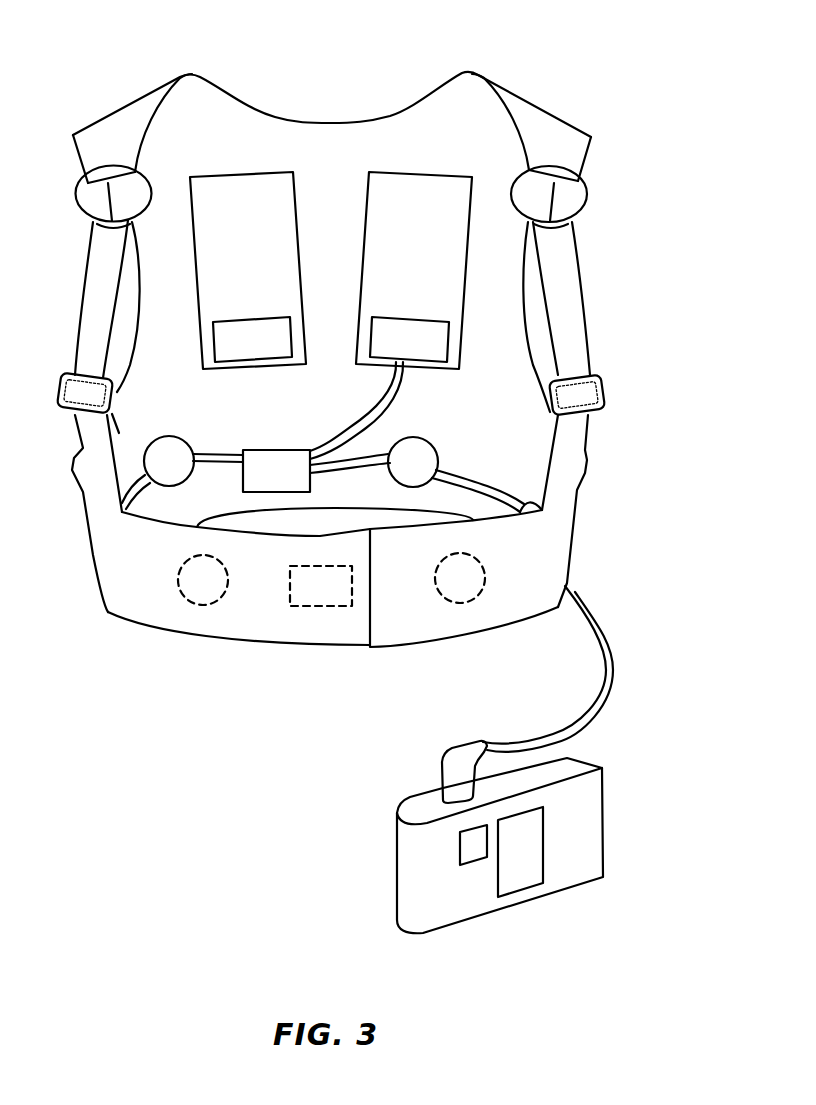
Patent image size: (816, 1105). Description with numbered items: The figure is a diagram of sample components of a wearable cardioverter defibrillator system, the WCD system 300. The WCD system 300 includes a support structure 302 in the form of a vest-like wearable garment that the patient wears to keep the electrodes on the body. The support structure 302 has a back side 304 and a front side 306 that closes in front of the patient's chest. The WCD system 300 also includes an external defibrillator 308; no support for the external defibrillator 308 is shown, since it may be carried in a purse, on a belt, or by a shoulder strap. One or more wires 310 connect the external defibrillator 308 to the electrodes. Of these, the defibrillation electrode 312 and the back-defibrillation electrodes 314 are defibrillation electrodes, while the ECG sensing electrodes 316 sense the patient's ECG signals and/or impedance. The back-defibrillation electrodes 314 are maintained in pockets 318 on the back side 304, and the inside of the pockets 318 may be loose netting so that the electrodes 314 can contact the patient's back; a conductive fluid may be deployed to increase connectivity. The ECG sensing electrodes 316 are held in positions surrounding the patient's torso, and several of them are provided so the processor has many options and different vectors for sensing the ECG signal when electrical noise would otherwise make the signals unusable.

The WCD system 300 is at (643, 117).
The support structure 302 is at (112, 123).
The back side 304 is at (423, 127).
The front side 306 is at (328, 624).
The external defibrillator 308 is at (410, 897).
The wires 310 is at (363, 416).
The defibrillation electrode 312 is at (289, 590).
The back-defibrillation electrodes 314 is at (272, 351).
The ECG sensing electrodes 316 is at (166, 436).
The pockets 318 is at (390, 168).